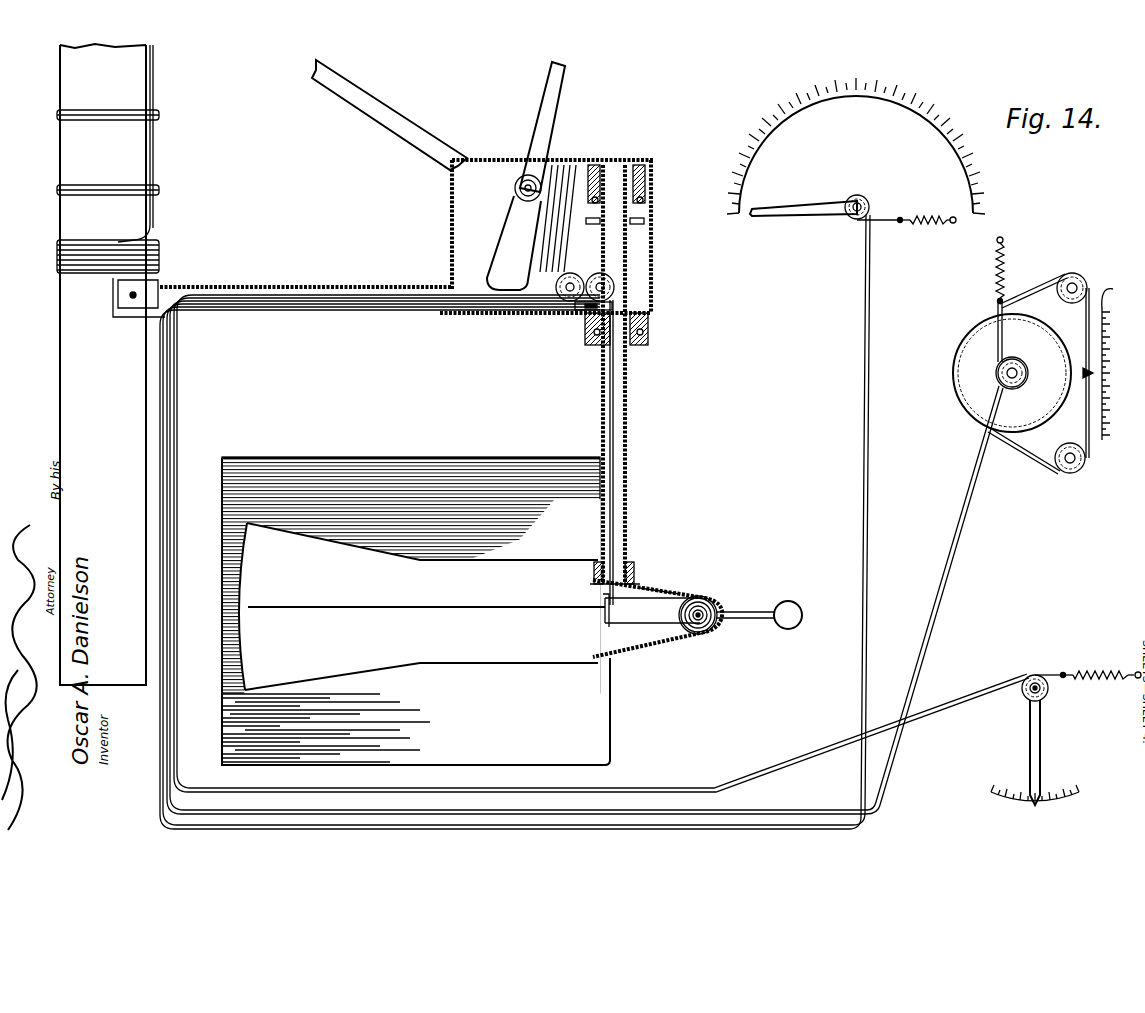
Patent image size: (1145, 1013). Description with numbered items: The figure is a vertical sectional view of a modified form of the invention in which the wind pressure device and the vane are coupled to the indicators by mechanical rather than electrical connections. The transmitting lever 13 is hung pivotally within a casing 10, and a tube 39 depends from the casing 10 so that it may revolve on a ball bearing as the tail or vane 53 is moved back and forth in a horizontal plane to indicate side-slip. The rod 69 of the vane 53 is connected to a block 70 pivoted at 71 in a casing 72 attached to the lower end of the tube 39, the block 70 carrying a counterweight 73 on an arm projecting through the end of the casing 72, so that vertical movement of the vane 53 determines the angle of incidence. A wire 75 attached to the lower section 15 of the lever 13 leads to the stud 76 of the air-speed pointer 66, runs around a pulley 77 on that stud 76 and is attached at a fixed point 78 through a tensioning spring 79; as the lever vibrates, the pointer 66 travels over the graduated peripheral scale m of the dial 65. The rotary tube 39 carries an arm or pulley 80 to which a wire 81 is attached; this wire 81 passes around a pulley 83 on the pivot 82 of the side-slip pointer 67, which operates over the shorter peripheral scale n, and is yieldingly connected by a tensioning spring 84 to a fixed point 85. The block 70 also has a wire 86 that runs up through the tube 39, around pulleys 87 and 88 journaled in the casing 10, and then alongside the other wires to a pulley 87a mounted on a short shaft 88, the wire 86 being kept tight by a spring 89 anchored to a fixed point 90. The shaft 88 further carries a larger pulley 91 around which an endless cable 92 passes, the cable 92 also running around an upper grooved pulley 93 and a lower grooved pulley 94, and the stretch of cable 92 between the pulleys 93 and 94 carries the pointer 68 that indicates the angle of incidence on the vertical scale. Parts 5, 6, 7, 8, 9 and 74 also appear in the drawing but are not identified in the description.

The post 5 is at (60, 385).
The conductor wire 6 is at (157, 234).
The bands 7 is at (57, 118).
The arm 8 is at (425, 130).
The shelf 9 is at (327, 285).
The casing 10 is at (512, 161).
The transmitting lever 13 is at (546, 97).
The lower section of transmitting lever 15 is at (510, 206).
The tube 39 is at (628, 401).
The vane 53 is at (375, 660).
The dial 65 is at (856, 147).
The pointer 66 is at (815, 207).
The pointer 67 is at (1041, 745).
The pointer 68 is at (1120, 362).
The rod 69 is at (637, 648).
The block 70 is at (690, 624).
The pivot 71 is at (714, 612).
The casing 72 is at (660, 591).
The counterweight 73 is at (760, 603).
The bearing 74 is at (703, 598).
The wire 75 is at (460, 296).
The stud 76 is at (865, 200).
The pulley 77 is at (870, 218).
The fixed point 78 is at (954, 224).
The spring 79 is at (923, 233).
The arm or pulley 80 is at (640, 312).
The wire 81 is at (555, 313).
The pivot 82 is at (1029, 681).
The pulley 83 is at (1049, 694).
The tensioning spring 84 is at (1092, 673).
The fixed point 85 is at (1107, 663).
The wire 86 is at (614, 500).
The pulley 87 is at (586, 314).
The pulley 87a is at (1019, 367).
The pulley 88 is at (579, 270).
The spring 89 is at (1005, 272).
The fixed point 90 is at (1004, 240).
The larger pulley 91 is at (1042, 420).
The cable 92 is at (1050, 282).
The upper grooved pulley 93 is at (1040, 374).
The lower grooved pulley 94 is at (1073, 474).
The graduated peripheral scale m is at (846, 112).
The shorter peripheral scale n is at (1035, 796).